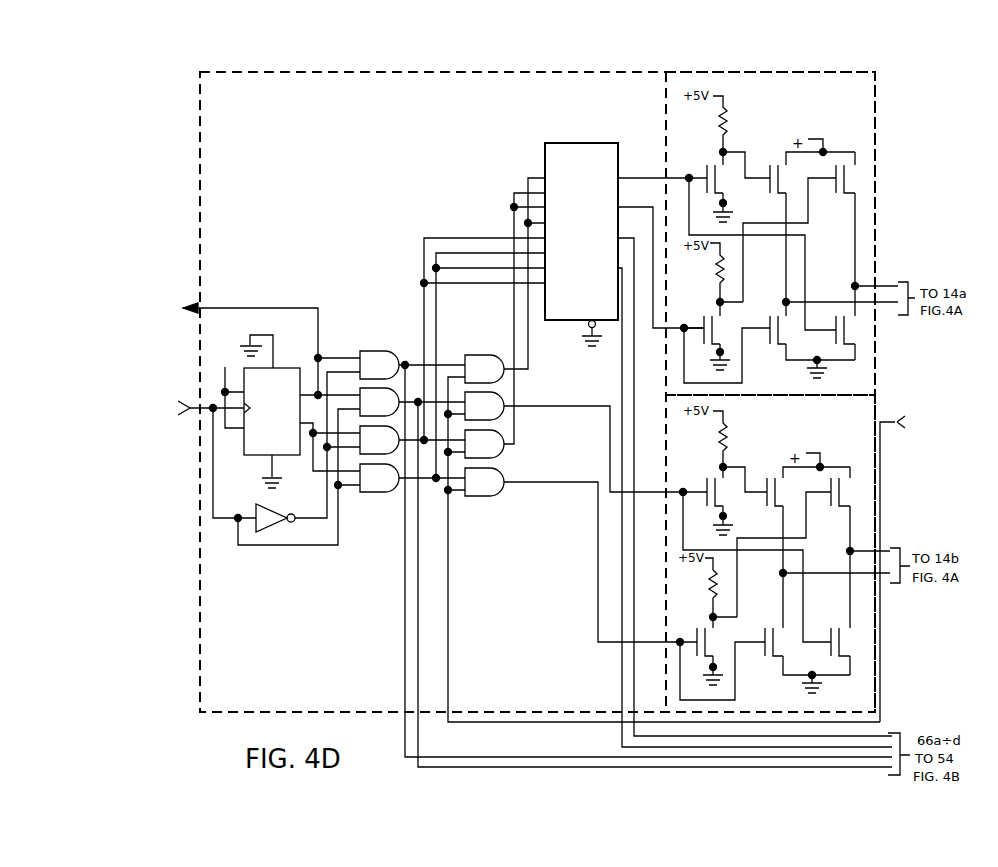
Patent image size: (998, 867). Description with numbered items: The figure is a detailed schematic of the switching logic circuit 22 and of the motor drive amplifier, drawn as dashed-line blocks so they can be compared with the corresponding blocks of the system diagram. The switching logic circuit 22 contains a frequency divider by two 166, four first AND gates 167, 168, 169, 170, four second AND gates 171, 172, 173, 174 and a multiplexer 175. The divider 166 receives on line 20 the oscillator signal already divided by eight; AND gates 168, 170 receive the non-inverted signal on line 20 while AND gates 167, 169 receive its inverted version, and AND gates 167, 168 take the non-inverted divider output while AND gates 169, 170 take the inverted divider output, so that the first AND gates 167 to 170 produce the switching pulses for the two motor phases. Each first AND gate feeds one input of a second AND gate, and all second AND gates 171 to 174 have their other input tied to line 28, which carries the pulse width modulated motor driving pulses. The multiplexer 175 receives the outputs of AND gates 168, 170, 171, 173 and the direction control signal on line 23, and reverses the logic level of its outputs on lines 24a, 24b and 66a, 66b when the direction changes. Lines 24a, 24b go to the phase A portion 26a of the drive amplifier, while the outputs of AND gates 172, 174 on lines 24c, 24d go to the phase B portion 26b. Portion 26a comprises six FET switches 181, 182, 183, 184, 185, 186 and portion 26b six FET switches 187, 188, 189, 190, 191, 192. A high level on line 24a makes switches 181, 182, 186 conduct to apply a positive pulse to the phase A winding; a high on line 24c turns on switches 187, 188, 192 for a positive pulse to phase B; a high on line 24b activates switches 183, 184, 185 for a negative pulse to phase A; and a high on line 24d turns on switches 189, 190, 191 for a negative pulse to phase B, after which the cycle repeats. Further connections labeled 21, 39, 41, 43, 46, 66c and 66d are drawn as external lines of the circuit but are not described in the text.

The line 20 is at (190, 405).
The output line to FIG. 4C 21 is at (223, 308).
The switching logic circuit 22 is at (375, 138).
The line 23 is at (562, 322).
The line 24a is at (641, 173).
The line 24b is at (622, 207).
The line 24c is at (563, 406).
The line 24d is at (548, 482).
The portion of the motor drive amplifier 26a is at (793, 87).
The portion of the motor drive amplifier 26b is at (860, 410).
The line 28 is at (885, 467).
The output line to 14a 39 is at (866, 283).
The output line to 14a 41 is at (866, 308).
The output line to 14b 43 is at (863, 550).
The output line to 14b 46 is at (860, 580).
The line 66a is at (637, 294).
The line 66b is at (623, 316).
The signal line 66c to 54 66c is at (463, 756).
The signal line 66d to 54 66d is at (543, 766).
The frequency divider by two 166 is at (296, 372).
The first AND gate 167 is at (378, 359).
The first AND gate 168 is at (364, 398).
The first AND gate 169 is at (360, 456).
The first AND gate 170 is at (372, 492).
The second AND gate 171 is at (482, 358).
The second AND gate 172 is at (505, 392).
The second AND gate 173 is at (503, 460).
The second AND gate 174 is at (503, 500).
The multiplexer 175 is at (562, 158).
The FET switch 181 is at (705, 168).
The FET switch 182 is at (769, 168).
The FET switch 183 is at (837, 168).
The FET switch 184 is at (718, 322).
The FET switch 185 is at (787, 325).
The FET switch 186 is at (866, 322).
The FET switch 187 is at (704, 485).
The FET switch 188 is at (767, 483).
The FET switch 189 is at (832, 483).
The FET switch 190 is at (715, 637).
The FET switch 191 is at (783, 638).
The FET switch 192 is at (833, 660).